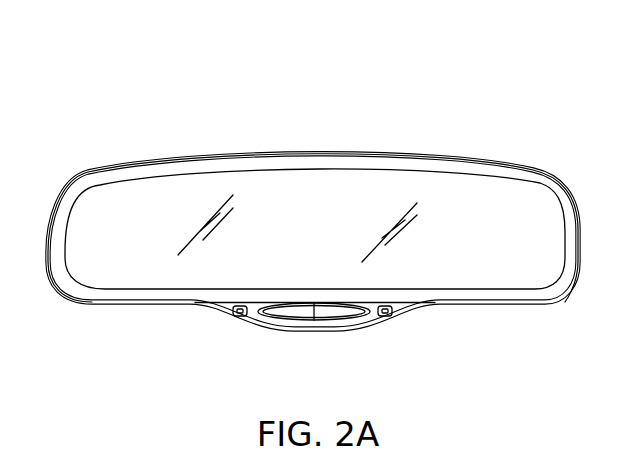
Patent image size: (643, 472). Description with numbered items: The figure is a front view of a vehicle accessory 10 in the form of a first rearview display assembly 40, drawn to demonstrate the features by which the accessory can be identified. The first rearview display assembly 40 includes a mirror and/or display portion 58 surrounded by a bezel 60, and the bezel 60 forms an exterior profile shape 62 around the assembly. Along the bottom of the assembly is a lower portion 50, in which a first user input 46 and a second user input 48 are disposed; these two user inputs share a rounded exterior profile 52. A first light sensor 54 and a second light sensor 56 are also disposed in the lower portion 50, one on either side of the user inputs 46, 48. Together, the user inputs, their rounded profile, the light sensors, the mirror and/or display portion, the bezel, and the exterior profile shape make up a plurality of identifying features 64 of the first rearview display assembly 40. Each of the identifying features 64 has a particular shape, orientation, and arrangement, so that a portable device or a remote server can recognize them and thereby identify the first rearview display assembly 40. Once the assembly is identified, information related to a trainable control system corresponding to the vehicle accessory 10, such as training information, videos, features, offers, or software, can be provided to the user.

The vehicle accessory 10 is at (450, 113).
The first rearview display assembly 40 is at (160, 160).
The first user input 46 is at (292, 318).
The second user input 48 is at (333, 317).
The lower portion 50 is at (202, 327).
The rounded exterior profile 52 is at (393, 314).
The first light sensor 54 is at (243, 320).
The second light sensor 56 is at (420, 320).
The mirror and/or display portion 58 is at (107, 260).
The bezel 60 is at (525, 172).
The exterior profile shape 62 is at (570, 288).
The identifying features 64 is at (413, 77).